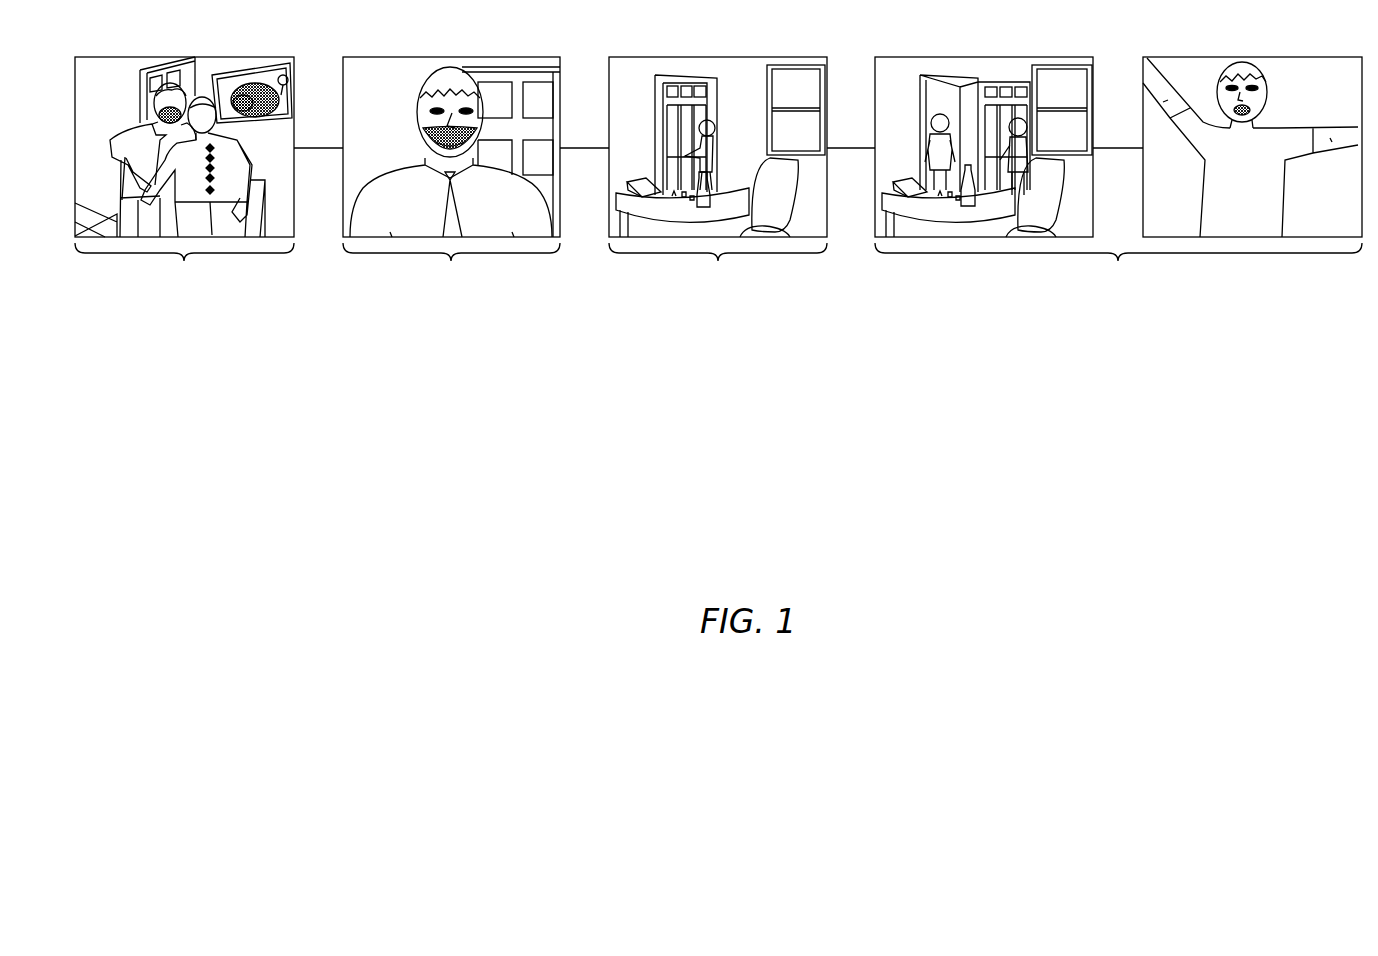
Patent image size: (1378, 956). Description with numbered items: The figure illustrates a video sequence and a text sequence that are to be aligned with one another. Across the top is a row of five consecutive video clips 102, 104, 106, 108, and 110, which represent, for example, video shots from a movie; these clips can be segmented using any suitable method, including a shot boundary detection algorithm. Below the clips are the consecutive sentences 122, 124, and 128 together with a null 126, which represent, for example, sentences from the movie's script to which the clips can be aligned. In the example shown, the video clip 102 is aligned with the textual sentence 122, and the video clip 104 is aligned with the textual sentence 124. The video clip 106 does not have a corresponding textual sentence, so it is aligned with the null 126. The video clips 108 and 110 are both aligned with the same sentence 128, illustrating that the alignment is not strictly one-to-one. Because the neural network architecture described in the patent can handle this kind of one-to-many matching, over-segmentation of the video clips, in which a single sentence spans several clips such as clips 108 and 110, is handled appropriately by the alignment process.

The video clip 102 is at (181, 56).
The video clip 104 is at (455, 56).
The video clip 106 is at (720, 56).
The video clip 108 is at (987, 56).
The video clip 110 is at (1252, 56).
The sentence 122 is at (184, 282).
The sentence 124 is at (451, 282).
The null 126 is at (718, 282).
The sentence 128 is at (1118, 282).